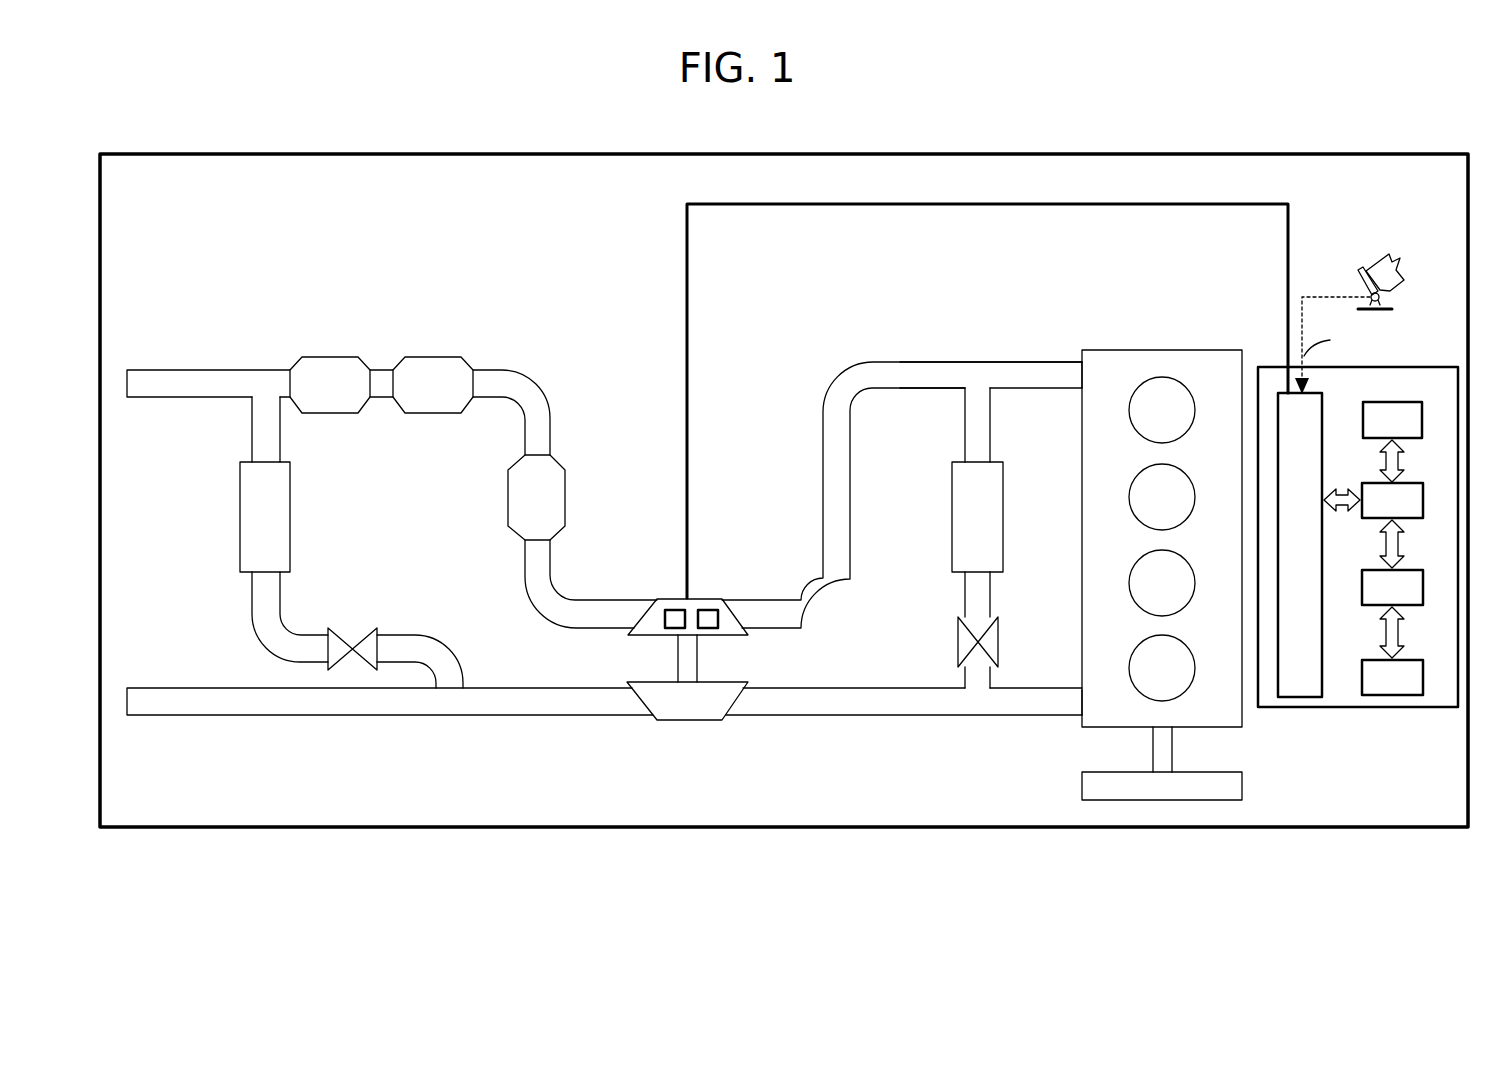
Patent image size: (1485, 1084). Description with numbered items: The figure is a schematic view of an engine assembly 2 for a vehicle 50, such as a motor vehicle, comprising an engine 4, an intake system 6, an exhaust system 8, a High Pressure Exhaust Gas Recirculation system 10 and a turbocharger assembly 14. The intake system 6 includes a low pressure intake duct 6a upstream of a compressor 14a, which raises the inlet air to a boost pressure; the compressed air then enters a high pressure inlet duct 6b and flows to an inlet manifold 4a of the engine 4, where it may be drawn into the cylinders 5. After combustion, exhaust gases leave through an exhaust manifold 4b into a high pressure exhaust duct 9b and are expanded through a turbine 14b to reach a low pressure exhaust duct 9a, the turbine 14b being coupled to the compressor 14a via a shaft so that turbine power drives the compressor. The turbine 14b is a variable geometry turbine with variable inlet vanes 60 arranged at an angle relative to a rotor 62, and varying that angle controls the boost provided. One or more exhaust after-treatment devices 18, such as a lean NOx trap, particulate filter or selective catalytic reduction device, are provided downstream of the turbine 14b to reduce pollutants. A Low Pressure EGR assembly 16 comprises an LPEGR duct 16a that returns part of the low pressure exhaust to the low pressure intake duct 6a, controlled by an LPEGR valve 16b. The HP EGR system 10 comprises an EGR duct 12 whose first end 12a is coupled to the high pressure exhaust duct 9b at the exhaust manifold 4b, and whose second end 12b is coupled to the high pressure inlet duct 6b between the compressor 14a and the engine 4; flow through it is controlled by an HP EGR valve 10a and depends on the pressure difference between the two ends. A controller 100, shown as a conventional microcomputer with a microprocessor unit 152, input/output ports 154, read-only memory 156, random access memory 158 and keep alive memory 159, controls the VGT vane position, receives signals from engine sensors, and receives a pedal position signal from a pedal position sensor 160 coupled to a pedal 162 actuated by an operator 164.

The engine assembly 2 is at (1136, 290).
The engine 4 is at (1134, 551).
The inlet manifold 4a is at (1082, 706).
The exhaust manifold 4b is at (1082, 380).
The cylinders 5 is at (1162, 539).
The intake system 6 is at (604, 736).
The low pressure intake duct 6a is at (212, 712).
The high pressure inlet duct 6b is at (932, 712).
The exhaust system 8 is at (778, 392).
The low pressure exhaust duct 9a is at (268, 370).
The high pressure exhaust duct 9b is at (904, 370).
The High Pressure Exhaust Gas Recirculation system 10 is at (889, 538).
The HP EGR valve 10a is at (968, 648).
The EGR duct 12 is at (968, 436).
The first end of the HP EGR duct 12a is at (980, 386).
The second end of the HP EGR duct 12b is at (978, 692).
The turbocharger assembly 14 is at (728, 662).
The compressor 14a is at (683, 722).
The turbine 14b is at (699, 585).
The Low Pressure EGR assembly 16 is at (306, 542).
The LPEGR duct 16a is at (252, 431).
The LPEGR valve 16b is at (348, 628).
The exhaust after-treatment devices 18 is at (382, 345).
The vehicle 50 is at (112, 152).
The variable inlet vanes 60 is at (672, 608).
The rotor 62 is at (712, 610).
The controller 100 is at (1359, 552).
The microprocessor unit 152 is at (1423, 512).
The input/output ports 154 is at (1322, 412).
The read-only memory 156 is at (1422, 430).
The random access memory 158 is at (1423, 598).
The keep alive memory 159 is at (1423, 688).
The pedal position sensor 160 is at (1371, 321).
The pedal 162 is at (1360, 276).
The operator 164 is at (1400, 263).